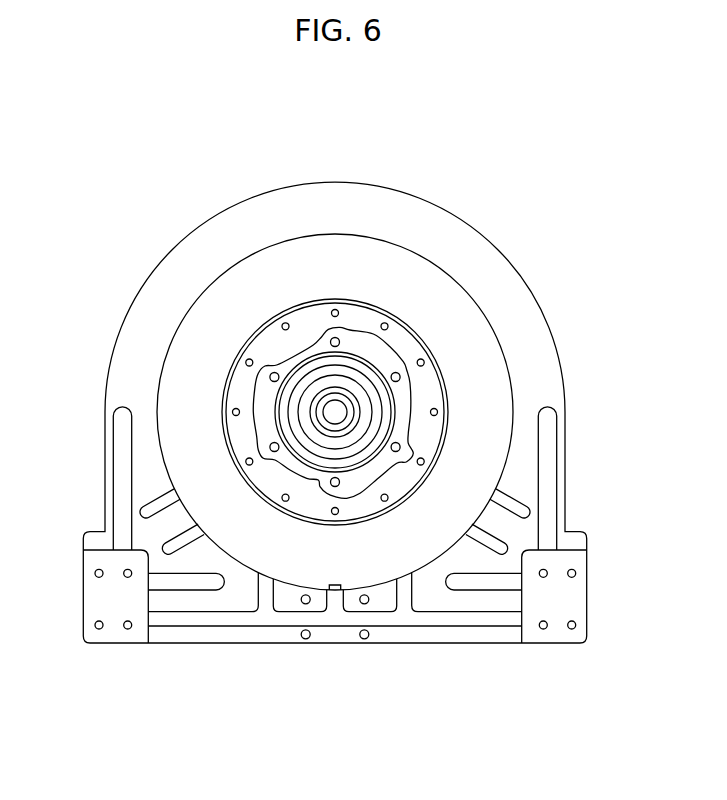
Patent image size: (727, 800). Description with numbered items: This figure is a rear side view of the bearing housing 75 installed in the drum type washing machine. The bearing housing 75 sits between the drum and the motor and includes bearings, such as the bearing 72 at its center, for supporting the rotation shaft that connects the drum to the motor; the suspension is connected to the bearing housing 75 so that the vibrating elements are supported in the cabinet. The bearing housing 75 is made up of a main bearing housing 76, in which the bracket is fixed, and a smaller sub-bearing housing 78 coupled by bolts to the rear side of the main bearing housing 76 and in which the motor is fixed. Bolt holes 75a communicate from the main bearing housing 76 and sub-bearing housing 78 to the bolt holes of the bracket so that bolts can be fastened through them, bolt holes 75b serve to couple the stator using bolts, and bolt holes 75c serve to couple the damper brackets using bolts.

The bearing 72 is at (347, 397).
The bearing housing 75 is at (165, 236).
The bolt holes 75a is at (334, 309).
The bolt holes 75b is at (336, 337).
The bolt holes 75c is at (304, 638).
The main bearing housing 76 is at (132, 304).
The sub-bearing housing 78 is at (433, 388).